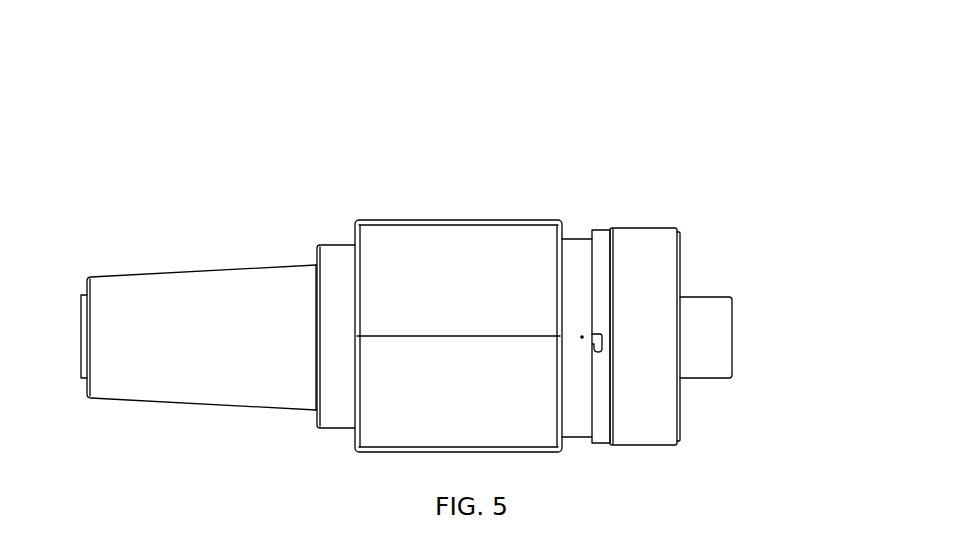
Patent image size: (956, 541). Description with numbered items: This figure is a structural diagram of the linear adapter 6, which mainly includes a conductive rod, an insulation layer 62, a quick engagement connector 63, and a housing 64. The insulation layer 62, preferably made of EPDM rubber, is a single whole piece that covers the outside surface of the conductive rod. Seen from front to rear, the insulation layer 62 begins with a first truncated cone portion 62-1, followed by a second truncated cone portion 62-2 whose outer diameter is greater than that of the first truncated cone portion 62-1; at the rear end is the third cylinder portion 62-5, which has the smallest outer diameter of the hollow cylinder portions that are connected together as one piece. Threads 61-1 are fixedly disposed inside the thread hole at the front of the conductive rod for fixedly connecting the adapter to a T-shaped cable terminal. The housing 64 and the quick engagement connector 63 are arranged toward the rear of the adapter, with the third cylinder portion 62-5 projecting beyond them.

The linear adapter 6 is at (670, 63).
The insulation layer 62 is at (416, 270).
The first truncated cone portion 62-1 is at (188, 293).
The threads 61-1 is at (81, 315).
The second truncated cone portion 62-2 is at (338, 268).
The housing 64 is at (443, 252).
The quick engagement connector 63 is at (620, 247).
The third cylinder portion 62-5 is at (702, 315).